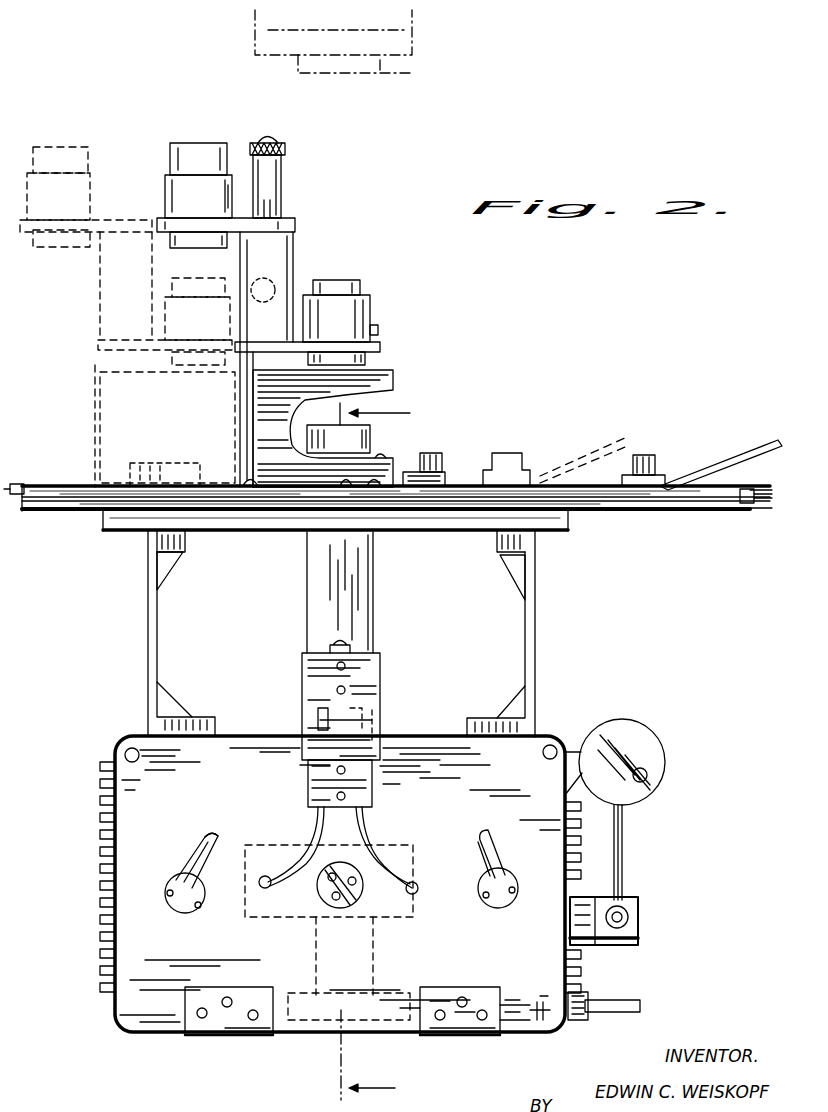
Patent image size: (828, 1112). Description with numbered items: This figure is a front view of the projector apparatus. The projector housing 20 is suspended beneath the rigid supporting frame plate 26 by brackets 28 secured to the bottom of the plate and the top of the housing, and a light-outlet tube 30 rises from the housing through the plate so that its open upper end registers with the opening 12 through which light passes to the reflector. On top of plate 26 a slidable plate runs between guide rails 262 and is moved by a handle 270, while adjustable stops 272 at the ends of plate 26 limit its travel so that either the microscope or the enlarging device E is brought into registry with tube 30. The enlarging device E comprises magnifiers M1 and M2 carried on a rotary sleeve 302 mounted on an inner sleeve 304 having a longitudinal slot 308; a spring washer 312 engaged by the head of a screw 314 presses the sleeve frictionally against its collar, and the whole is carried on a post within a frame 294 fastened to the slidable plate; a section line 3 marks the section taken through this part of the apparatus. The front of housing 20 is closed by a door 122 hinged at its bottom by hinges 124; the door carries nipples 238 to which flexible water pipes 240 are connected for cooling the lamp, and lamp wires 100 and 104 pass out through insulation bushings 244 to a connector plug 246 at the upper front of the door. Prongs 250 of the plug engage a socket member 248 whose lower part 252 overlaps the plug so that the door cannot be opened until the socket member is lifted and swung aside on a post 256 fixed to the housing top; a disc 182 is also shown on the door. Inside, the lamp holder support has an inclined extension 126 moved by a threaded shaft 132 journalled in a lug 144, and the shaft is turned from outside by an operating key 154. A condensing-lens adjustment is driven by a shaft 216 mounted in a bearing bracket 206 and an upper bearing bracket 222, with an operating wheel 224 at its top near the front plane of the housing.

The opening 12 is at (385, 68).
The magnifier M1 is at (196, 135).
The magnifier M2 is at (385, 298).
The magnifier (enlarging device) E is at (372, 195).
The screw 314 is at (267, 135).
The spring washer 312 is at (285, 140).
The inner sleeve 304 is at (286, 170).
The longitudinal slot 308 is at (283, 210).
The rotary sleeve 302 is at (297, 265).
The frame 294 is at (398, 378).
The section line 3- 3 is at (383, 751).
The light-outlet tube 30 is at (380, 445).
The supporting frame plate 26 is at (660, 520).
The guide rails 262 is at (598, 518).
The adjustable stops 272 is at (20, 500).
The handle 270 is at (597, 452).
The brackets 28 is at (148, 615).
The post 256 is at (348, 652).
The socket member 248 is at (303, 675).
The prongs 250 is at (332, 708).
The lower part of socket member 252 is at (303, 735).
The connector plug 246 is at (380, 770).
The housing 20 is at (437, 740).
The front pivoted closure (door) 122 is at (142, 960).
The operating wheel or knob 224 is at (636, 745).
The bearing bracket 222 is at (635, 818).
The shaft 216 is at (624, 860).
The bearing bracket 206 is at (640, 902).
The operating key 154 is at (620, 1000).
The flexible water pipes 240 is at (188, 858).
The nipples 238 is at (172, 918).
The wire 100 is at (286, 836).
The wire 104 is at (382, 834).
The insulation bushings 244 is at (262, 888).
The disc 182 is at (325, 895).
The hinges 124 is at (210, 1027).
The inclined extension 126 is at (305, 1020).
The shaft 132 is at (540, 1030).
The lug 144 is at (532, 1018).